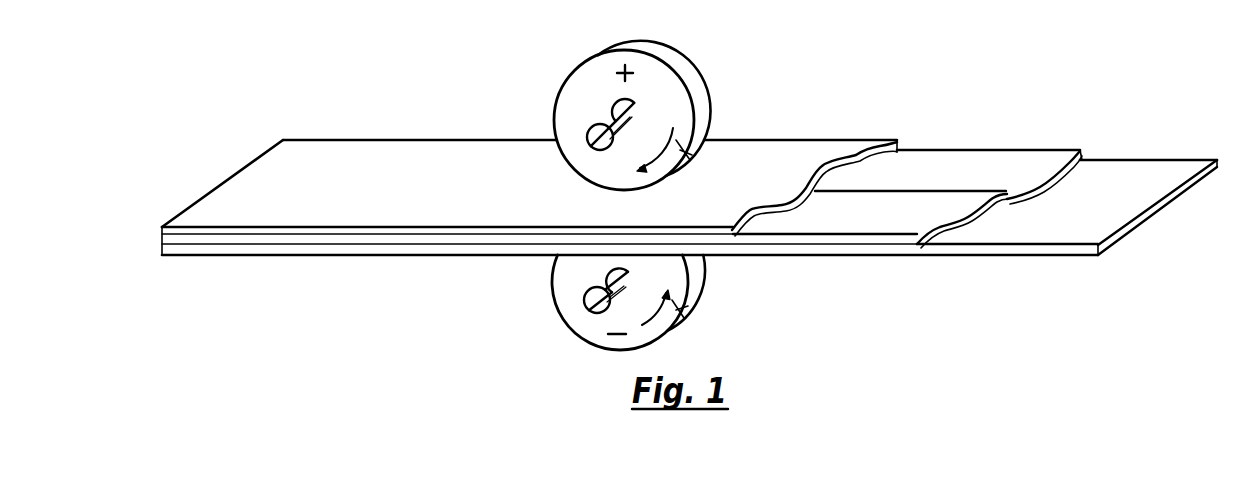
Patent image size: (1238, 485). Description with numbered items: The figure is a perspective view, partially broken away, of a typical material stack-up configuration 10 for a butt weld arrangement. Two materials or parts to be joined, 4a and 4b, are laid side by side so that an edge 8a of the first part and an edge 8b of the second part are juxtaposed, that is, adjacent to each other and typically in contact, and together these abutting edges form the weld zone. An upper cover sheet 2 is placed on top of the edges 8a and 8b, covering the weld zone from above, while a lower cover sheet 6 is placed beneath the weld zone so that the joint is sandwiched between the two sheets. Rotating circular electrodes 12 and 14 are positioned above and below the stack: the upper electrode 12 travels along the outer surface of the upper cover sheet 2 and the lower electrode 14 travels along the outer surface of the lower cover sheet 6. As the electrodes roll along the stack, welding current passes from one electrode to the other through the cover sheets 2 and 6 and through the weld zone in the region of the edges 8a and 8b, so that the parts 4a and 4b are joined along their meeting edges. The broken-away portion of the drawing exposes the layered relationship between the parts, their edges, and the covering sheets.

The material stack-up configuration 10 is at (338, 105).
The upper cover sheet 2 is at (445, 152).
The rotating circular electrode 12 is at (588, 72).
The rotating circular electrode 14 is at (564, 292).
The edge 8a is at (874, 192).
The edge 8b is at (918, 190).
The part to be joined 4a is at (896, 228).
The part to be joined 4b is at (1043, 162).
The lower cover sheet 6 is at (1034, 236).